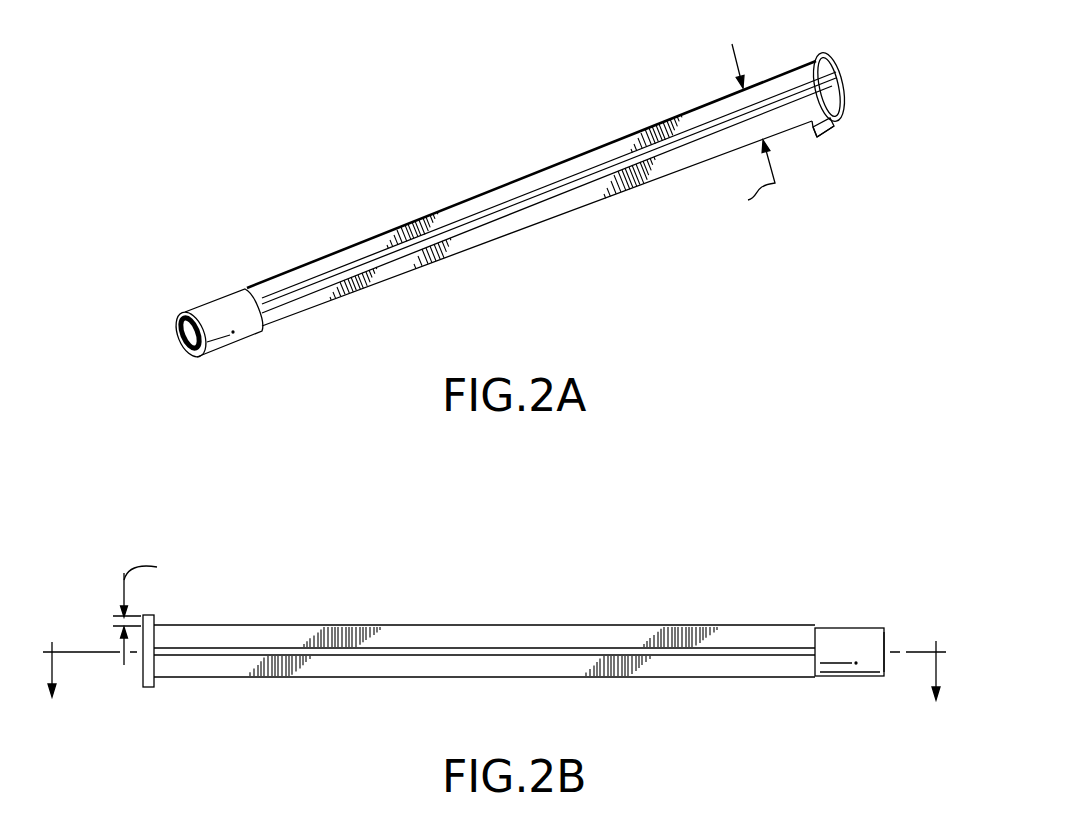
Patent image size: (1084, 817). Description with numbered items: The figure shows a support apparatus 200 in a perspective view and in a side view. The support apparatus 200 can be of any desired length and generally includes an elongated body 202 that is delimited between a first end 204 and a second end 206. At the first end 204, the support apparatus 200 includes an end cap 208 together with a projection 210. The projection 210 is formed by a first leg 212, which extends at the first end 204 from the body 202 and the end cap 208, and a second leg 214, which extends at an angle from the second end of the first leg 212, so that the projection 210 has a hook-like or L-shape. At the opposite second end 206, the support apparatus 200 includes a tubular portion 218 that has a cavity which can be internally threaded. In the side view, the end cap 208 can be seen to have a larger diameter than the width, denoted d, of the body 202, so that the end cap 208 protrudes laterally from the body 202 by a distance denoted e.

In FIG. 2A, the support apparatus 200 is at (518, 184).
In FIG. 2B, the support apparatus 200 is at (503, 626).
In FIG. 2A, the body 202 is at (443, 259).
In FIG. 2B, the body 202 is at (372, 677).
In FIG. 2A, the first end 204 is at (842, 58).
In FIG. 2B, the first end 204 is at (145, 678).
In FIG. 2A, the second end 206 is at (183, 313).
In FIG. 2B, the second end 206 is at (885, 635).
In FIG. 2A, the end cap 208 is at (848, 84).
In FIG. 2B, the end cap 208 is at (142, 661).
In FIG. 2A, the projection 210 is at (840, 127).
In FIG. 2A, the first leg 212 is at (848, 120).
In FIG. 2A, the second leg 214 is at (828, 132).
In FIG. 2A, the tubular portion 218 is at (218, 298).
In FIG. 2B, the tubular portion 218 is at (851, 628).